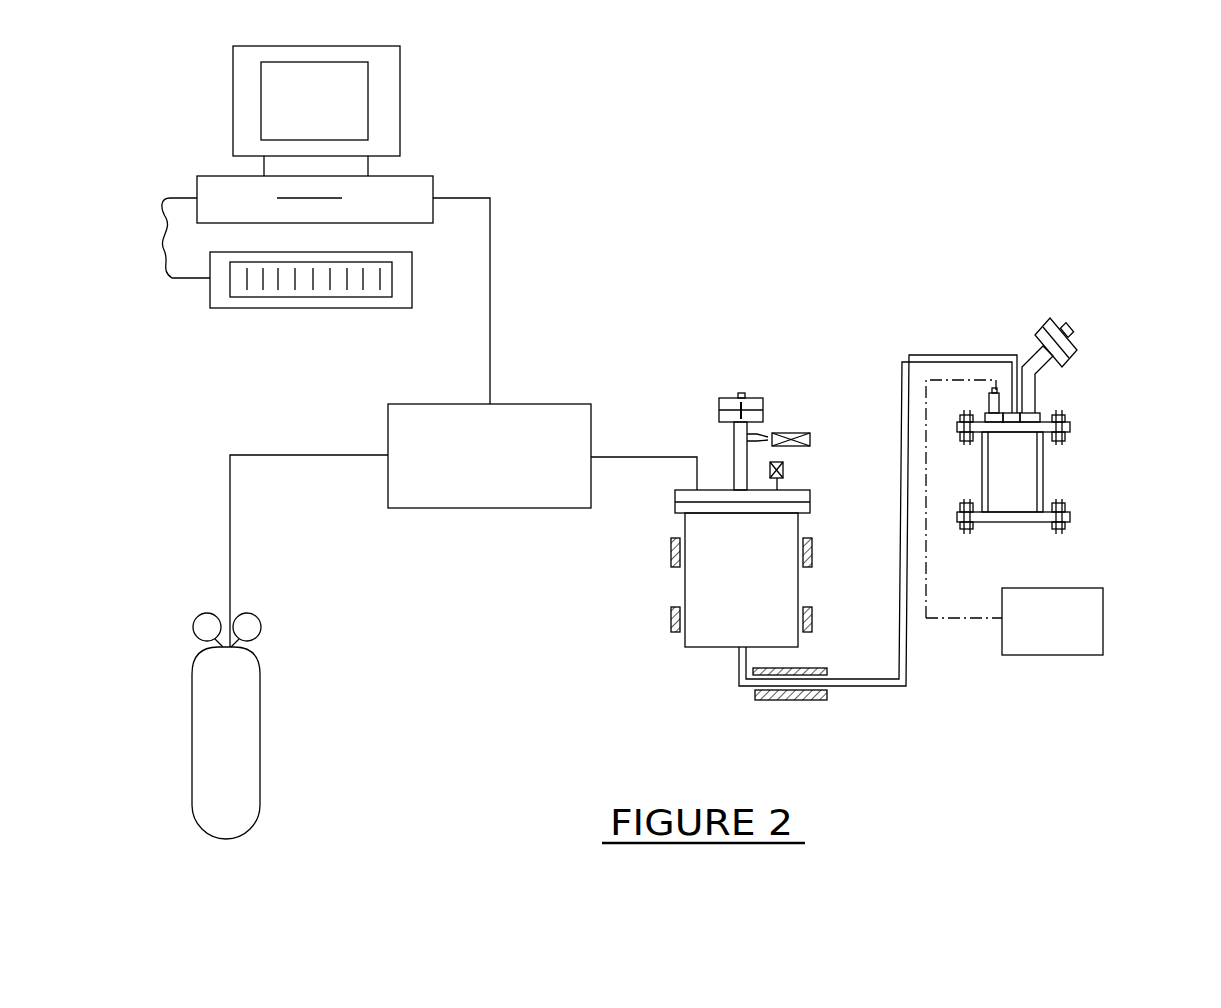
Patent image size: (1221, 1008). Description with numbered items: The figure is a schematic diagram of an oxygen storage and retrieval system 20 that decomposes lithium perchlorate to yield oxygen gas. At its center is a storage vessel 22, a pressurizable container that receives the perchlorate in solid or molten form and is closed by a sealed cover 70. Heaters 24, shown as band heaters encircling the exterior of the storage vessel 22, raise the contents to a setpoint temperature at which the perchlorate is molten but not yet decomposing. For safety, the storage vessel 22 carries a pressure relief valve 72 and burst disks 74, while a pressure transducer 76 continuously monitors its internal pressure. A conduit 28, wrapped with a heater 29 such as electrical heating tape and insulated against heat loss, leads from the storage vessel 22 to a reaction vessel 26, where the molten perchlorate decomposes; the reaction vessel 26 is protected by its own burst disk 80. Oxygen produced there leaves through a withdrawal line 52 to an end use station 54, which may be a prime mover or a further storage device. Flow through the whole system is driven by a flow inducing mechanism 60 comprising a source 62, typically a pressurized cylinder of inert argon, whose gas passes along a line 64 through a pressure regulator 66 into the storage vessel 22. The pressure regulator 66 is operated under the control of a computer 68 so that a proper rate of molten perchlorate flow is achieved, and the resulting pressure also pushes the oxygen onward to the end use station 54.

The oxygen storage and retrieval system 20 is at (861, 213).
The storage vessel 22 is at (728, 580).
The heaters 24 is at (670, 550).
The reaction vessel 26 is at (1050, 477).
The conduit 28 is at (885, 687).
The heater 29 is at (782, 701).
The oxygen withdrawal line 52 is at (941, 620).
The end use station 54 is at (1090, 618).
The flow inducing mechanism 60 is at (419, 669).
The source 62 is at (259, 747).
The line 64 is at (657, 457).
The pressure regulator 66 is at (474, 479).
The computer 68 is at (440, 117).
The cover 70 is at (805, 498).
The pressure relief valve 72 is at (790, 433).
The burst disks 74 is at (757, 402).
The pressure transducer 76 is at (785, 470).
The burst disk 80 is at (1076, 351).